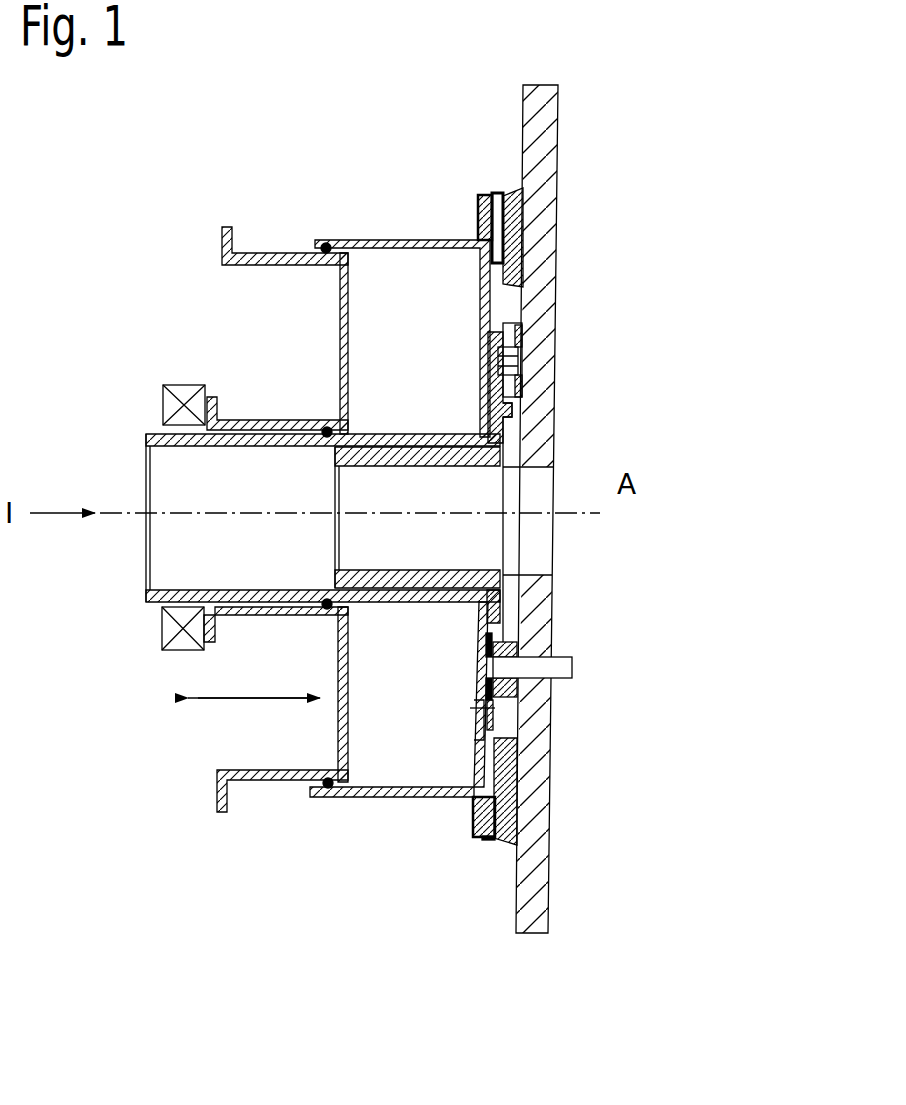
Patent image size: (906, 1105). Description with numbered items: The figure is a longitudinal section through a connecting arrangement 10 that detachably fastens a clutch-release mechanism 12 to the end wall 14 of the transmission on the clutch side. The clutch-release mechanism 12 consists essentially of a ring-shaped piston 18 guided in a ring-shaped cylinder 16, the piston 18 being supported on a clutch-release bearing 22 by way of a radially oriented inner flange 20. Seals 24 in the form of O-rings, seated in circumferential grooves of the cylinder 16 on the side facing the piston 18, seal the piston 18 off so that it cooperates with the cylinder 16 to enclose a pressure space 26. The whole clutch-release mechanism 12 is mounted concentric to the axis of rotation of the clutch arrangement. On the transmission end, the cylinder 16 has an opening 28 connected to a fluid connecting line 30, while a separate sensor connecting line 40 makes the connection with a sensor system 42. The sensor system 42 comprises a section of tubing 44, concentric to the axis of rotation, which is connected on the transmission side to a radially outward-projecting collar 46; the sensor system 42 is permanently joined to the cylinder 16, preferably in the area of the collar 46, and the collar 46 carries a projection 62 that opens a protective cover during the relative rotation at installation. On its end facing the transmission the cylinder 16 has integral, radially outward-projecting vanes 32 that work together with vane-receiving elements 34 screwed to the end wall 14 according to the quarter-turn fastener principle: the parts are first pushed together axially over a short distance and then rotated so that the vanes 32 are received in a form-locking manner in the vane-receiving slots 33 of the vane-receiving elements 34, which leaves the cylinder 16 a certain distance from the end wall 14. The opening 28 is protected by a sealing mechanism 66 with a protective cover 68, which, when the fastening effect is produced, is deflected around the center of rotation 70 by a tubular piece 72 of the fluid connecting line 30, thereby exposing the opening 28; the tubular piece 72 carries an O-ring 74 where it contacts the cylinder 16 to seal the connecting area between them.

The connecting arrangement 10 is at (590, 509).
The clutch-release mechanism 12 is at (296, 459).
The end wall 14 is at (542, 311).
The ring-shaped cylinder 16 is at (395, 240).
The ring-shaped piston 18 is at (248, 262).
The inner flange 20 is at (227, 393).
The clutch-release bearing 22 is at (163, 410).
The seals 24 is at (325, 244).
The pressure space 26 is at (437, 366).
The opening 28 is at (352, 707).
The fluid connecting line 30 is at (553, 671).
The vanes 32 is at (484, 196).
The vane-receiving slots 33 is at (497, 193).
The vane-receiving elements 34 is at (517, 263).
The sensor connecting line 40 is at (522, 332).
The sensor system 42 is at (326, 529).
The section of tubing 44 is at (440, 468).
The collar 46 is at (492, 445).
The projection 62 is at (510, 415).
The sealing mechanism 66 is at (494, 722).
The protective cover 68 is at (490, 703).
The center of rotation 70 is at (476, 708).
The tubular piece 72 is at (518, 622).
The O-ring 74 is at (487, 647).